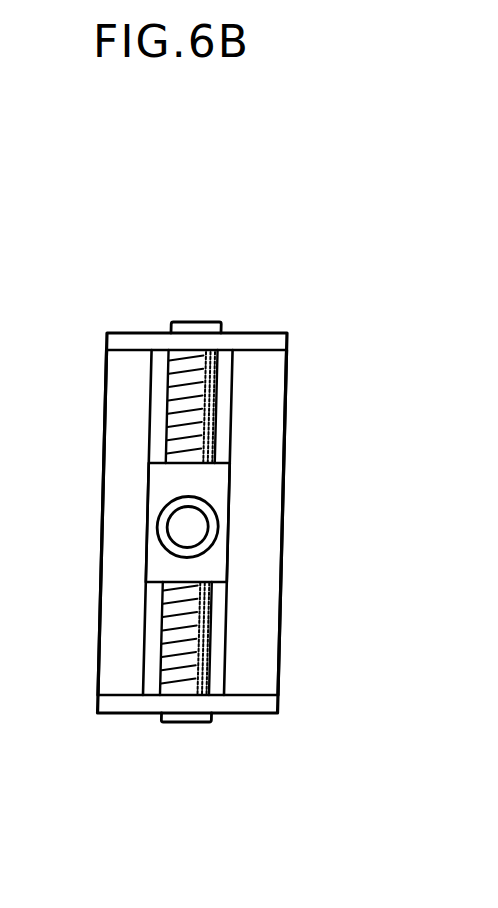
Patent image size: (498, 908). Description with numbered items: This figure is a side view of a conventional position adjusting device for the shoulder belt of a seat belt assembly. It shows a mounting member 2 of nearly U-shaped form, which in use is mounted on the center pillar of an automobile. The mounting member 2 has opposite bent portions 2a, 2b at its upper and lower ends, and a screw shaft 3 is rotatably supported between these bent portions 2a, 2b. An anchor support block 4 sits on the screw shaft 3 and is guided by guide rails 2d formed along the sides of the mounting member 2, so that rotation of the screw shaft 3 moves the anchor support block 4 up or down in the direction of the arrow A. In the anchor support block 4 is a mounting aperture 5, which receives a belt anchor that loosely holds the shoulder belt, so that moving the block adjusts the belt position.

The mounting member 2 is at (279, 672).
The bent portion 2a is at (250, 333).
The bent portion 2b is at (134, 704).
The guide rails 2d is at (106, 383).
The screw shaft 3 is at (222, 445).
The anchor support block 4 is at (153, 562).
The mounting aperture 5 is at (188, 512).
The arrow A is at (323, 445).